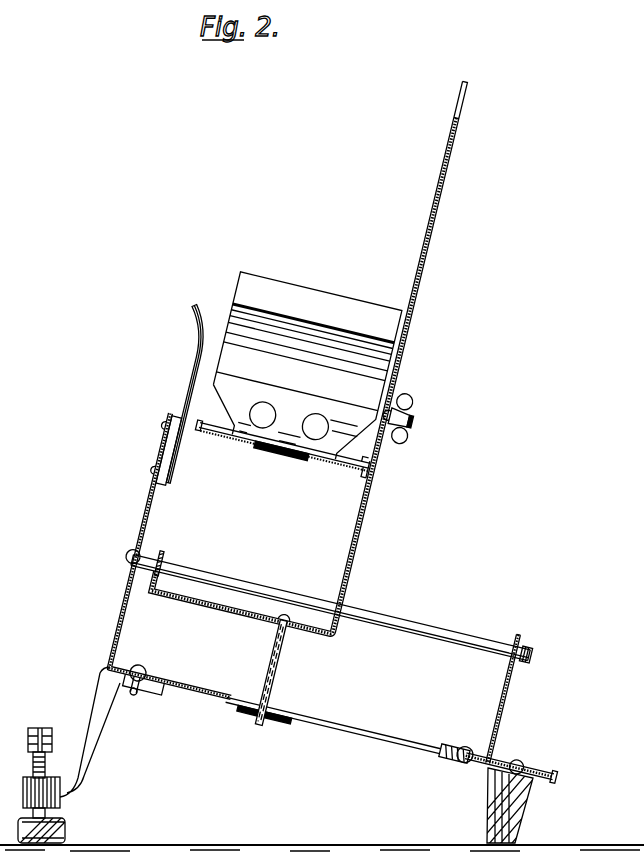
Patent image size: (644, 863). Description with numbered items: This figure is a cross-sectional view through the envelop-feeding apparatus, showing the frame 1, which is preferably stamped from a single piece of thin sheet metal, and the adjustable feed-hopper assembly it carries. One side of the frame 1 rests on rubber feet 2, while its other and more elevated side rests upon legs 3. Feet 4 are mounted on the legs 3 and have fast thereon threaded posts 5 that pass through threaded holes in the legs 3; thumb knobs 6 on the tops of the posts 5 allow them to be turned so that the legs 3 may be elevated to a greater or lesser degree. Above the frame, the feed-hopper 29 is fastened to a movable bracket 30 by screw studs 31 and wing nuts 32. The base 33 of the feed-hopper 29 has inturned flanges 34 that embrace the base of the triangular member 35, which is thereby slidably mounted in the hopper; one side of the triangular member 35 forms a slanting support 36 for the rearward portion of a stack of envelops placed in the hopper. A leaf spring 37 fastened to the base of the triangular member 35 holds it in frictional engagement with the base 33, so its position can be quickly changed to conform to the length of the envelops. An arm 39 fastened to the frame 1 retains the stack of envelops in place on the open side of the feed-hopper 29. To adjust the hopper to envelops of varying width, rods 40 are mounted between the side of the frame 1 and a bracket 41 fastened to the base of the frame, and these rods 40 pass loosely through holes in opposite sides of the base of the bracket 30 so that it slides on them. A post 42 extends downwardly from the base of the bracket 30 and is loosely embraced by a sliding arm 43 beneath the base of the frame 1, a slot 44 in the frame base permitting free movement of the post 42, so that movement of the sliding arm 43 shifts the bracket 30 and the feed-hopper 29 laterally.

The frame 1 is at (356, 604).
The rubber feet 2 is at (497, 808).
The legs 3 is at (85, 748).
The feet 4 is at (63, 828).
The threaded posts 5 is at (33, 762).
The thumb knobs 6 is at (43, 723).
The feed-hopper 29 is at (418, 283).
The movable bracket 30 is at (362, 530).
The screw studs 31 is at (413, 418).
The wing nuts 32 is at (399, 433).
The base of the feed-hopper 33 is at (240, 443).
The inturned flanges 34 is at (337, 470).
The triangular member 35 is at (322, 276).
The slanting support 36 is at (299, 382).
The leaf spring 37 is at (283, 454).
The arm 39 is at (187, 372).
The rods 40 is at (403, 625).
The bracket 41 is at (513, 698).
The post 42 is at (281, 670).
The sliding arm 43 is at (243, 713).
The slot 44 is at (369, 733).